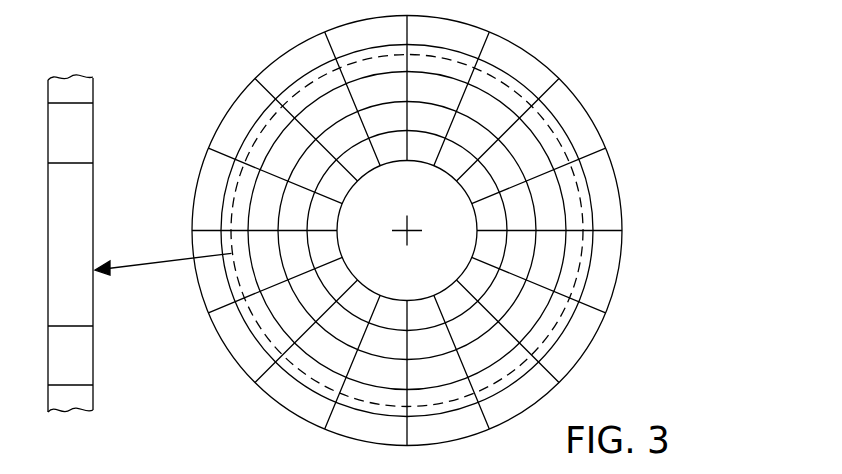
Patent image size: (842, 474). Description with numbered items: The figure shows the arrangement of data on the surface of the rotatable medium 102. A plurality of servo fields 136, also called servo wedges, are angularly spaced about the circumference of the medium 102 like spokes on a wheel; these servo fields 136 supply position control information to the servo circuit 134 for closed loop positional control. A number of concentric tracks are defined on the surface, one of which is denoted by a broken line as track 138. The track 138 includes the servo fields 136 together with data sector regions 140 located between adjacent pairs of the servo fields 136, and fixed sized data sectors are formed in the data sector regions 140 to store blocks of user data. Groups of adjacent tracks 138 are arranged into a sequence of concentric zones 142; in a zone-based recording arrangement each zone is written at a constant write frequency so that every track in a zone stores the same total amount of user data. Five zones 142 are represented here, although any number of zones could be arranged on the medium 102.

The medium 102 is at (525, 43).
The servo circuit 134 is at (414, 225).
The servo fields 136 is at (93, 117).
The track 138 is at (580, 270).
The data sector regions 140 is at (93, 208).
The zones 142 is at (610, 192).